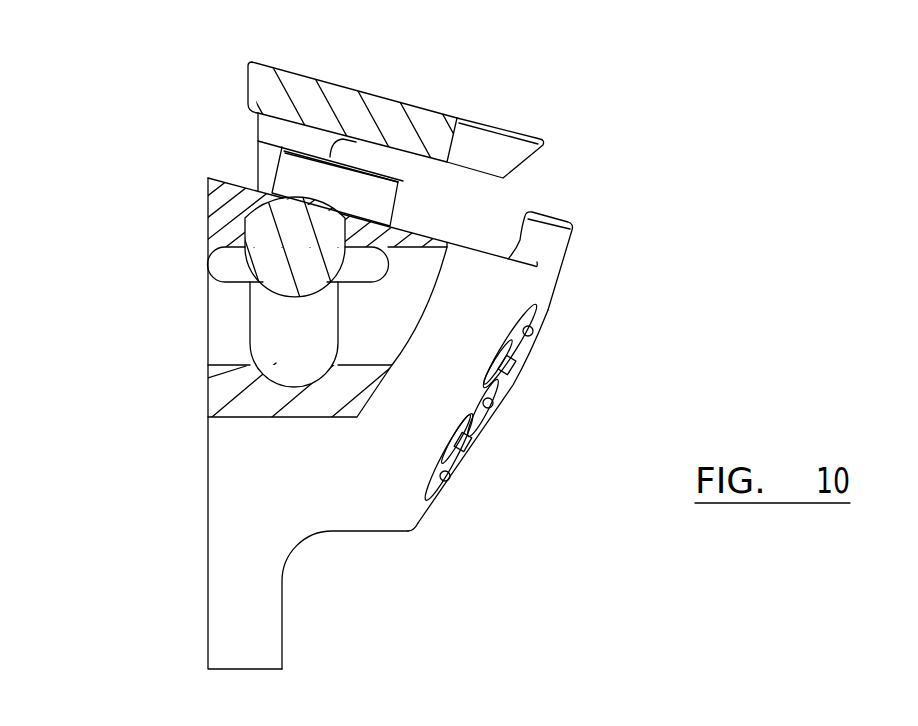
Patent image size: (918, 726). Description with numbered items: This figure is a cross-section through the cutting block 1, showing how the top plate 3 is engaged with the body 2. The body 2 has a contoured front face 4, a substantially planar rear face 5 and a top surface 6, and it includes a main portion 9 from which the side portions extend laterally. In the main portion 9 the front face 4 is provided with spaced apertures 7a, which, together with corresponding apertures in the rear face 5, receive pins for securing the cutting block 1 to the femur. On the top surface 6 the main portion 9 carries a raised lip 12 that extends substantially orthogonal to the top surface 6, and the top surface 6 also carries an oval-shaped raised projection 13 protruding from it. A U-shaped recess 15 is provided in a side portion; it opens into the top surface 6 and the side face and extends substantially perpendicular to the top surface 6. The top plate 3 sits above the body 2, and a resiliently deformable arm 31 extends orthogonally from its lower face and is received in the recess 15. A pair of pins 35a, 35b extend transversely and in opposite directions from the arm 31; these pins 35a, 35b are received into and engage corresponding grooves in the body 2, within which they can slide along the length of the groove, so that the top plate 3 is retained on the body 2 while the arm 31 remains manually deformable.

The cutting block 1 is at (168, 474).
The body 2 is at (348, 493).
The top plate 3 is at (408, 90).
The front face 4 is at (513, 385).
The rear face 5 is at (207, 313).
The top surface 6 is at (475, 255).
The spaced apertures 7a is at (525, 353).
The main portion 9 is at (412, 508).
The raised lip 12 is at (548, 248).
The raised projection 13 is at (313, 178).
The U-shaped recess 15 is at (292, 342).
The resiliently deformable arm 31 is at (248, 212).
The pin 35a is at (387, 273).
The pin 35b is at (223, 263).